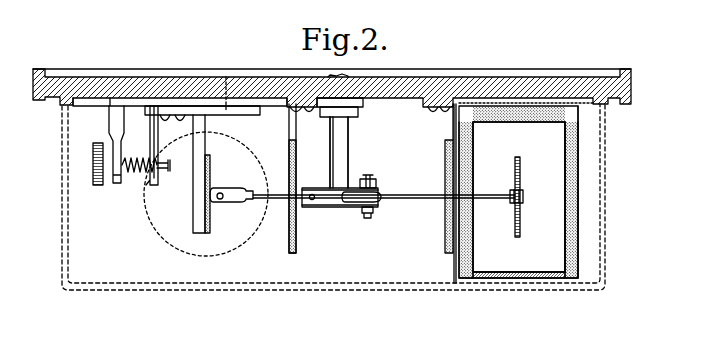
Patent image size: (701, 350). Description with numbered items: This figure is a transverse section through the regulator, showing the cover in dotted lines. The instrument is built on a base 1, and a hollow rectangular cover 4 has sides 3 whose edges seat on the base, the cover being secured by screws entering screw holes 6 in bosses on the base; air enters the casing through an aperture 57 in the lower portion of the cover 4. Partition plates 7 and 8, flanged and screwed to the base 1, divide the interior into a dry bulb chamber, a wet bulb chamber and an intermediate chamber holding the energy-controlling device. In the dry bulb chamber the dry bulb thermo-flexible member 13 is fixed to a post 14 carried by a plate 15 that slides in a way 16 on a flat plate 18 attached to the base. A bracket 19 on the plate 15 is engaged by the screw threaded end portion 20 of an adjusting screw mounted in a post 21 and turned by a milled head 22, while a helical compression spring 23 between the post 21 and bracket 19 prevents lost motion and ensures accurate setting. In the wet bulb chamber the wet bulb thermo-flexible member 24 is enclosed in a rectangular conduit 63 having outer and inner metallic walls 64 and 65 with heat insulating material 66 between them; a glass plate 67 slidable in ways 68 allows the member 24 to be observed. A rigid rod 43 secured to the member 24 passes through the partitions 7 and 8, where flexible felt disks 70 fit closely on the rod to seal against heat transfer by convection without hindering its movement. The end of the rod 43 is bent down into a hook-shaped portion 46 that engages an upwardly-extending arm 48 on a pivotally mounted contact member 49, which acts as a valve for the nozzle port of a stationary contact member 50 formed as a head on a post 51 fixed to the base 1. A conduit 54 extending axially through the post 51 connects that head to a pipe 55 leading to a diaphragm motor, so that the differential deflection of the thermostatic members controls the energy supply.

The base 1 is at (245, 83).
The sides of the cover 3 is at (607, 163).
The cover 4 is at (407, 287).
The screw holes 6 is at (570, 282).
The partition plate 7 is at (295, 269).
The partition plate 8 is at (448, 273).
The dry bulb thermo-flexible member 13 is at (211, 222).
The post or standard 14 is at (192, 204).
The plate 15 is at (226, 77).
The way 16 is at (233, 116).
The flat plate 18 is at (158, 100).
The bracket 19 is at (153, 186).
The screw threaded end portion 20 is at (171, 177).
The post 21 is at (116, 187).
The milled head 22 is at (102, 187).
The helical compression spring 23 is at (150, 162).
The wet bulb thermo-flexible member 24 is at (522, 172).
The rigid rod 43 is at (415, 193).
The hook-shaped portion 46 is at (348, 196).
The upwardly-extending arm 48 is at (377, 195).
The pivotally mounted contact member 49 is at (338, 210).
The stationary contact member 50 is at (312, 189).
The post 51 is at (325, 116).
The conduit 54 is at (348, 140).
The pipe 55 is at (348, 71).
The aperture 57 is at (230, 252).
The conduit 63 is at (550, 254).
The outer metallic wall 64 is at (578, 200).
The inner metallic wall 65 is at (567, 178).
The heat insulating material 66 is at (580, 218).
The glass plate 67 is at (533, 279).
The ways 68 is at (472, 279).
The disks 70 is at (297, 231).